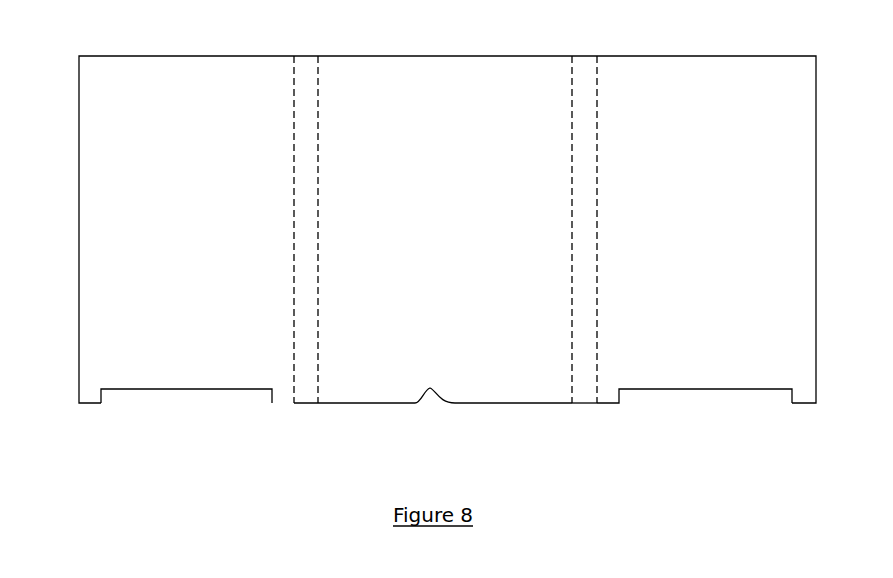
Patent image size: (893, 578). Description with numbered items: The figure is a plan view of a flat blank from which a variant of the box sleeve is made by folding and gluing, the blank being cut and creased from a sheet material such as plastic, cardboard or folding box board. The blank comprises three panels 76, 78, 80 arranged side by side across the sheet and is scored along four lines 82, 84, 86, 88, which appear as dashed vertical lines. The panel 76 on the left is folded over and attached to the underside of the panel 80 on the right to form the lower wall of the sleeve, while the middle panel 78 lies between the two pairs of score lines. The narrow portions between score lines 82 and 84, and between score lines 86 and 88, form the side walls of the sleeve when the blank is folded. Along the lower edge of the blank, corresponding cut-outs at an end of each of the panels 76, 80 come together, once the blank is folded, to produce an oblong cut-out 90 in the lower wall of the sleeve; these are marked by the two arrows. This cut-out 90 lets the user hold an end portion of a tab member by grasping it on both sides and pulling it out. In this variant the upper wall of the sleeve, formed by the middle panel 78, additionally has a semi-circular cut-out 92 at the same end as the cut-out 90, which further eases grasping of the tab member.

The panel 76 is at (97, 153).
The panel 78 is at (482, 70).
The panel 80 is at (693, 73).
The score line 82 is at (294, 403).
The score line 84 is at (318, 403).
The score line 86 is at (572, 403).
The score line 88 is at (597, 403).
The oblong cut-out 90 is at (193, 416).
The semi-circular cut-out 92 is at (430, 416).